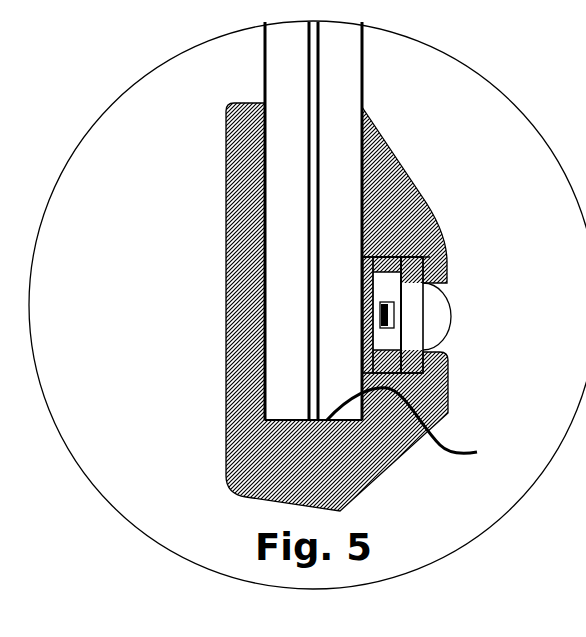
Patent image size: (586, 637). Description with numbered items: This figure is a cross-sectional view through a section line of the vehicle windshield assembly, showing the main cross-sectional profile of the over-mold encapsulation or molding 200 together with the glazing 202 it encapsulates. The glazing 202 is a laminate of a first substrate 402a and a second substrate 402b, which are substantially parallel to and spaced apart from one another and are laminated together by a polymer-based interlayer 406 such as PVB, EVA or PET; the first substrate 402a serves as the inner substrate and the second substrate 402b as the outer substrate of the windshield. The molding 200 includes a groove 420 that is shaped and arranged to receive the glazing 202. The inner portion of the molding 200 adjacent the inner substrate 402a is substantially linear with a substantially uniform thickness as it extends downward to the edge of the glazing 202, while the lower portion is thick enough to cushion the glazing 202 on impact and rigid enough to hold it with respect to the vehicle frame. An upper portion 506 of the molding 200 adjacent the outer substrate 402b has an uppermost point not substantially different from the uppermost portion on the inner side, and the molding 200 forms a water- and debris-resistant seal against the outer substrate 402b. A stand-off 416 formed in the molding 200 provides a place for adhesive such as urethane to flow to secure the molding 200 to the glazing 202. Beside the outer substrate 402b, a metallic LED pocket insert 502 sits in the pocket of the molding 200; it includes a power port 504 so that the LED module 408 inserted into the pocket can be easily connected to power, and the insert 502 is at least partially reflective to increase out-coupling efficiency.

The molding 200 is at (370, 445).
The glazing 202 is at (330, 345).
The first substrate 402a is at (292, 62).
The second substrate 402b is at (340, 66).
The polymer-based interlayer 406 is at (308, 313).
The LED module 408 is at (423, 318).
The stand-off 416 is at (365, 257).
The groove 420 is at (421, 426).
The metallic LED pocket insert 502 is at (402, 255).
The power port 504 is at (390, 312).
The upper portion 506 is at (388, 190).